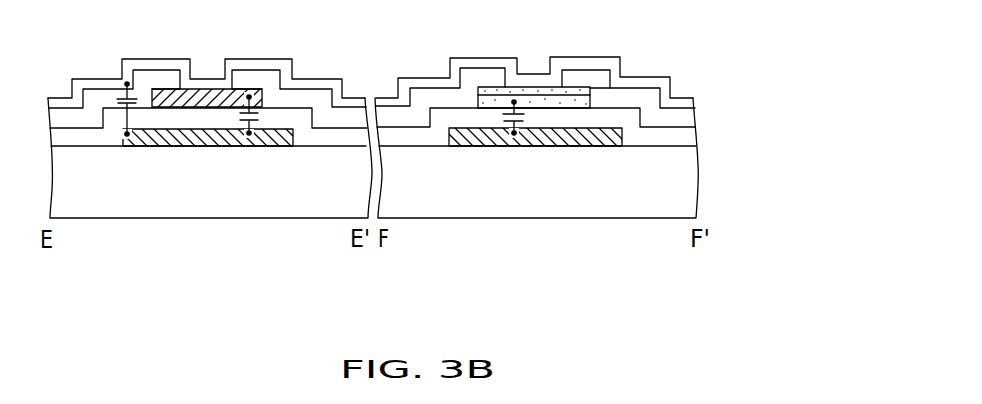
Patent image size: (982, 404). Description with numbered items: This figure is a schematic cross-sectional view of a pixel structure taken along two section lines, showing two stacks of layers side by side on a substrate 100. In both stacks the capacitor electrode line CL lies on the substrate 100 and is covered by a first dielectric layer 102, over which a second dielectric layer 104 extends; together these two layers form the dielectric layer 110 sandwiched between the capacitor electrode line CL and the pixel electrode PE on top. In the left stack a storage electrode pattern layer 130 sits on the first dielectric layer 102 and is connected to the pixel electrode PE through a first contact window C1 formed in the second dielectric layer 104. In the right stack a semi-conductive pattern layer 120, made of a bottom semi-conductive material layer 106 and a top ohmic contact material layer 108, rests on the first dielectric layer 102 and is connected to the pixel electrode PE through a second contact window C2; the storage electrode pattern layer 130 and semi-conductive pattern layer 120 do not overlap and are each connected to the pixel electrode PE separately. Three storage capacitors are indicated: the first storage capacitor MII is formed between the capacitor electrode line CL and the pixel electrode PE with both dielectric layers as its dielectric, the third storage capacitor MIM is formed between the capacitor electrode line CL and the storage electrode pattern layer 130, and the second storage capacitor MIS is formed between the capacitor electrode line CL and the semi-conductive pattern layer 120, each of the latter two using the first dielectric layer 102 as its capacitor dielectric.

The substrate 100 is at (683, 190).
The first dielectric layer 102 is at (680, 138).
The second dielectric layer 104 is at (680, 117).
The bottom semi-conductive material layer 106 is at (590, 102).
The top ohmic contact material layer 108 is at (622, 86).
The dielectric layer 110 is at (442, 110).
The semi-conductive pattern layer 120 is at (656, 61).
The storage electrode pattern layer 130 is at (172, 96).
The pixel electrode PE is at (277, 62).
The capacitor electrode line CL is at (203, 143).
The first storage capacitor MII is at (118, 100).
The third storage capacitor MIM is at (257, 120).
The second storage capacitor MIS is at (503, 116).
The first contact window C1 is at (189, 78).
The second contact window C2 is at (519, 75).